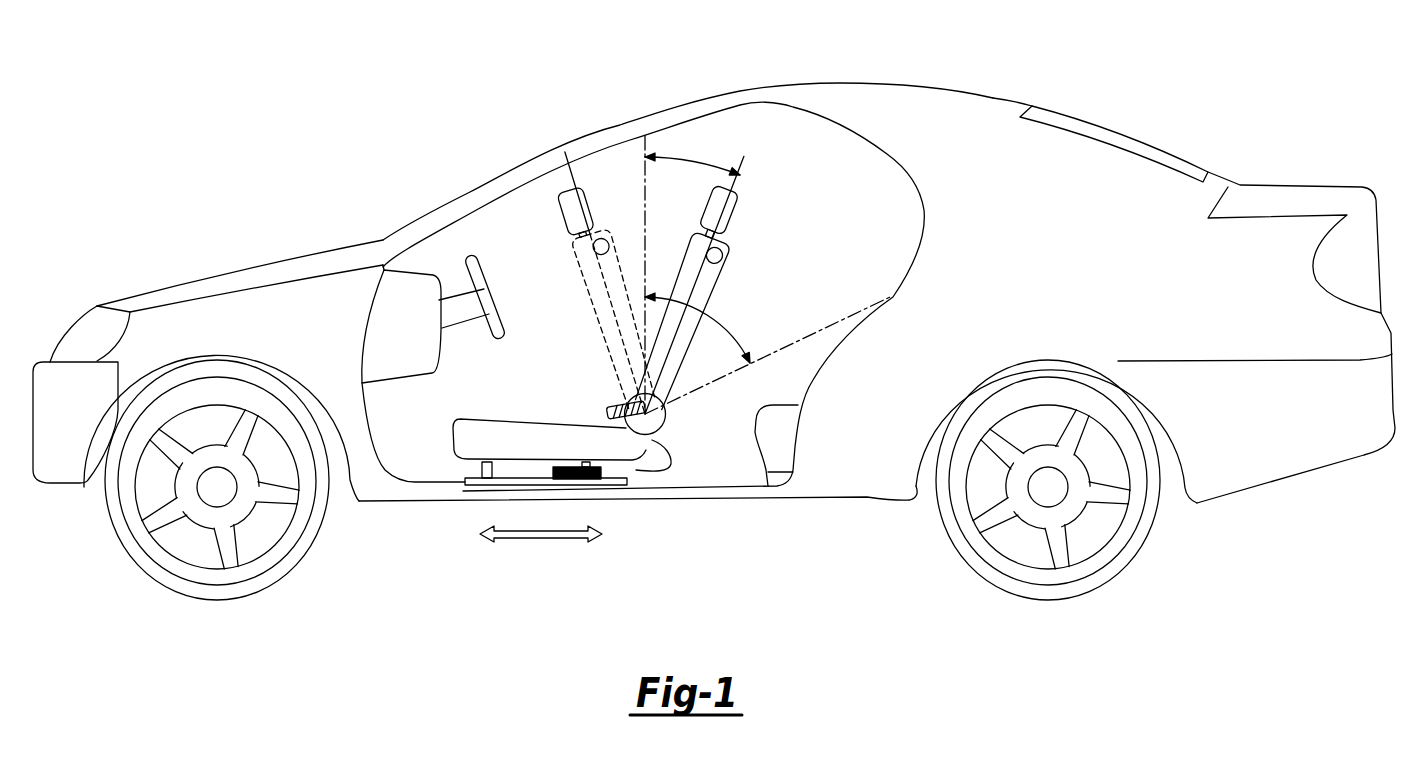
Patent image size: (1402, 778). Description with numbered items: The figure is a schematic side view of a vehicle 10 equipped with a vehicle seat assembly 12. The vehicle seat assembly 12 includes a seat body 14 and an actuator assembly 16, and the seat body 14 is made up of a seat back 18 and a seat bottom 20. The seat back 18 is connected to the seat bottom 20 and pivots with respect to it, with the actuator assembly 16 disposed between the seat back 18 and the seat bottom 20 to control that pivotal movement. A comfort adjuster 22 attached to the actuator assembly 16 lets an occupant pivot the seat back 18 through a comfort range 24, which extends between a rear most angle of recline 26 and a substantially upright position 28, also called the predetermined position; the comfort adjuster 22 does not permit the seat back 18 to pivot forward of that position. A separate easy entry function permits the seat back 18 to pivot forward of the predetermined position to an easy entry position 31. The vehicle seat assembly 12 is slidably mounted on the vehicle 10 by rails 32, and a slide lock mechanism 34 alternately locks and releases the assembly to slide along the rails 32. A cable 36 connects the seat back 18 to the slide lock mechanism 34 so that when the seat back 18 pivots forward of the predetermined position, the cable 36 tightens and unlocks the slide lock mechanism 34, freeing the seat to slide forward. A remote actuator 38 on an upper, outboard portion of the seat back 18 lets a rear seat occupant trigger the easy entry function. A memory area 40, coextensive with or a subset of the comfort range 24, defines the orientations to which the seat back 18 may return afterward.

The vehicle 10 is at (992, 98).
The vehicle seat assembly 12 is at (628, 300).
The seat body 14 is at (627, 331).
The actuator assembly 16 is at (630, 438).
The seat back 18 is at (716, 285).
The seat bottom 20 is at (476, 419).
The comfort adjuster 22 is at (606, 407).
The comfort range 24 is at (732, 331).
The rear most angle of recline 26 is at (848, 316).
The substantially upright position 28 is at (645, 150).
The easy entry position 31 is at (573, 178).
The rails 32 is at (463, 482).
The slide lock mechanism 34 is at (600, 479).
The cable 36 is at (672, 462).
The remote actuator 38 is at (722, 254).
The memory area 40 is at (692, 161).